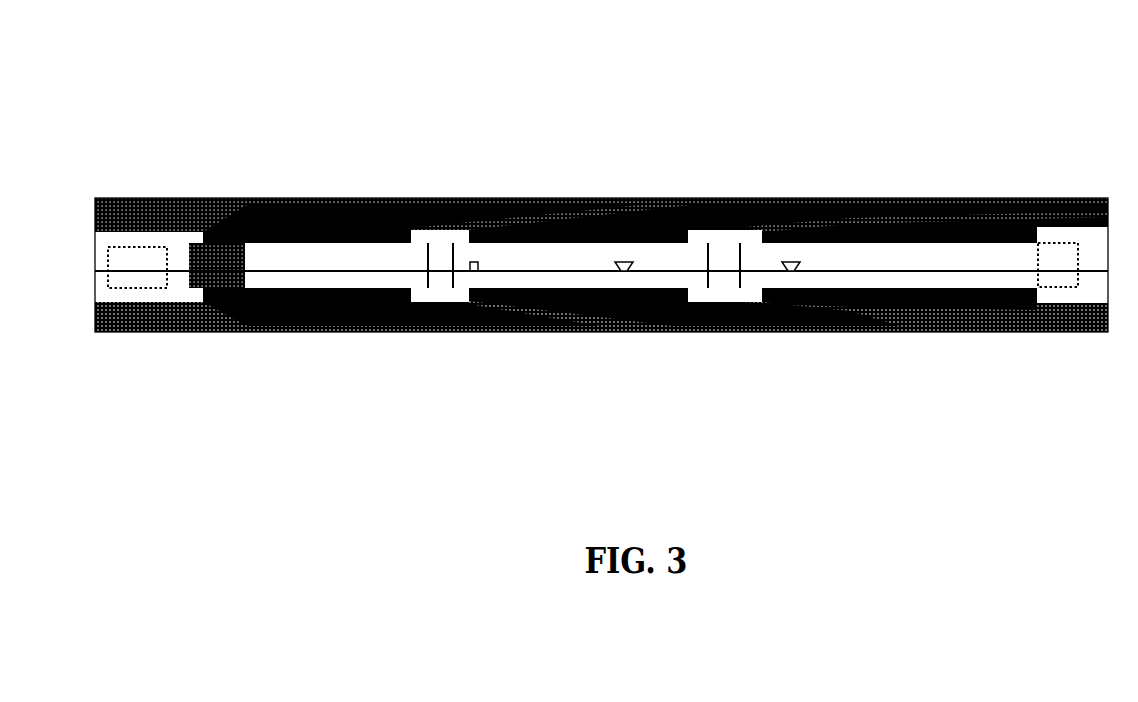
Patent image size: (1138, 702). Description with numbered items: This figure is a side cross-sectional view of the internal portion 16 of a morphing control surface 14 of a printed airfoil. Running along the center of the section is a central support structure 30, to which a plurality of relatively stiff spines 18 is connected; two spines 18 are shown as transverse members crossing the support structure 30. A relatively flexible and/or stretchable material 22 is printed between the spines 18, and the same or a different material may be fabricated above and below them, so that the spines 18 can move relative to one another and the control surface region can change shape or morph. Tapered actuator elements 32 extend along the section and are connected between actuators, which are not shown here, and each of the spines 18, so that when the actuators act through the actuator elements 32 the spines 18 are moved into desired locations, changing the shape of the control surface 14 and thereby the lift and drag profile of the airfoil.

The control surface 14 is at (835, 80).
The internal portion 16 is at (943, 200).
The spines 18 is at (445, 265).
The flexible material 22 is at (377, 317).
The central support structure 30 is at (318, 265).
The actuator elements 32 is at (563, 200).